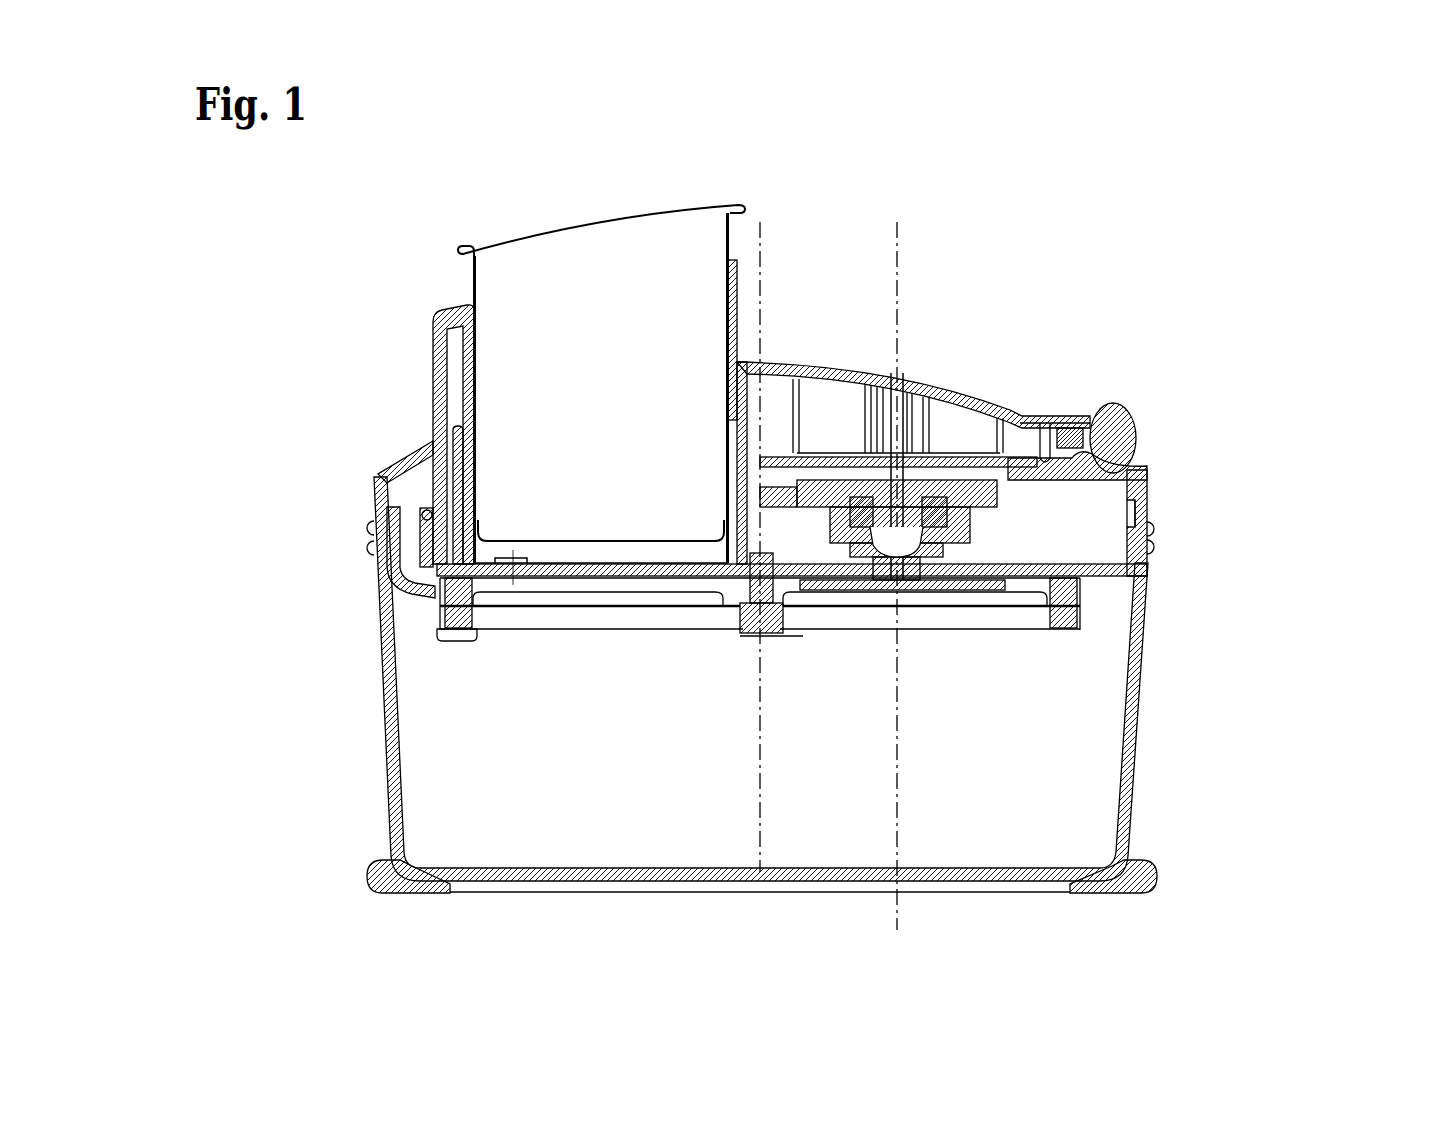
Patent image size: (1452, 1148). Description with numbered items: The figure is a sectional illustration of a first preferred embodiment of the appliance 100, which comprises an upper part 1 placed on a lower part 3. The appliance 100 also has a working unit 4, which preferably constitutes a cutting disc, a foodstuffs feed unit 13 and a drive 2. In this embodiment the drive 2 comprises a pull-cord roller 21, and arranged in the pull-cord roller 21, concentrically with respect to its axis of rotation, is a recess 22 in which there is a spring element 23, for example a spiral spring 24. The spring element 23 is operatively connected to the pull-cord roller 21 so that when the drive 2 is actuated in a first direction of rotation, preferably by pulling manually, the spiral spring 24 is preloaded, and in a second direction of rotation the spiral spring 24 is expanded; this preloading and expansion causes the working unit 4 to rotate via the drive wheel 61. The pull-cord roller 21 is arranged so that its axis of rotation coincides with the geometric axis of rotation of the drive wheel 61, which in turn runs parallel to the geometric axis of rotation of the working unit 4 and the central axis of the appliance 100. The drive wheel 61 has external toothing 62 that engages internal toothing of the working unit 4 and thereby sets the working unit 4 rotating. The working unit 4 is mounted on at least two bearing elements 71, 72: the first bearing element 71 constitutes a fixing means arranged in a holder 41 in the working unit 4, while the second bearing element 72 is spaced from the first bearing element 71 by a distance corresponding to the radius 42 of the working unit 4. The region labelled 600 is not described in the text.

The appliance 100 is at (814, 516).
The foodstuffs feed unit 13 is at (590, 202).
The upper part 1 is at (373, 483).
The drive 2 is at (1142, 402).
The pull-cord roller 21 is at (1013, 453).
The recess 22 is at (1025, 377).
The spring element 23 is at (1025, 377).
The spiral spring 24 is at (965, 375).
The radius 42 is at (968, 632).
The first bearing element 71 is at (669, 661).
The holder 41 is at (737, 643).
The working unit 4 is at (668, 645).
The second bearing element 72 is at (440, 622).
The drive wheel 61 is at (1200, 513).
The external toothing 62 is at (999, 584).
The lower part 3 is at (833, 685).
The base inner chamber 600 is at (1015, 643).